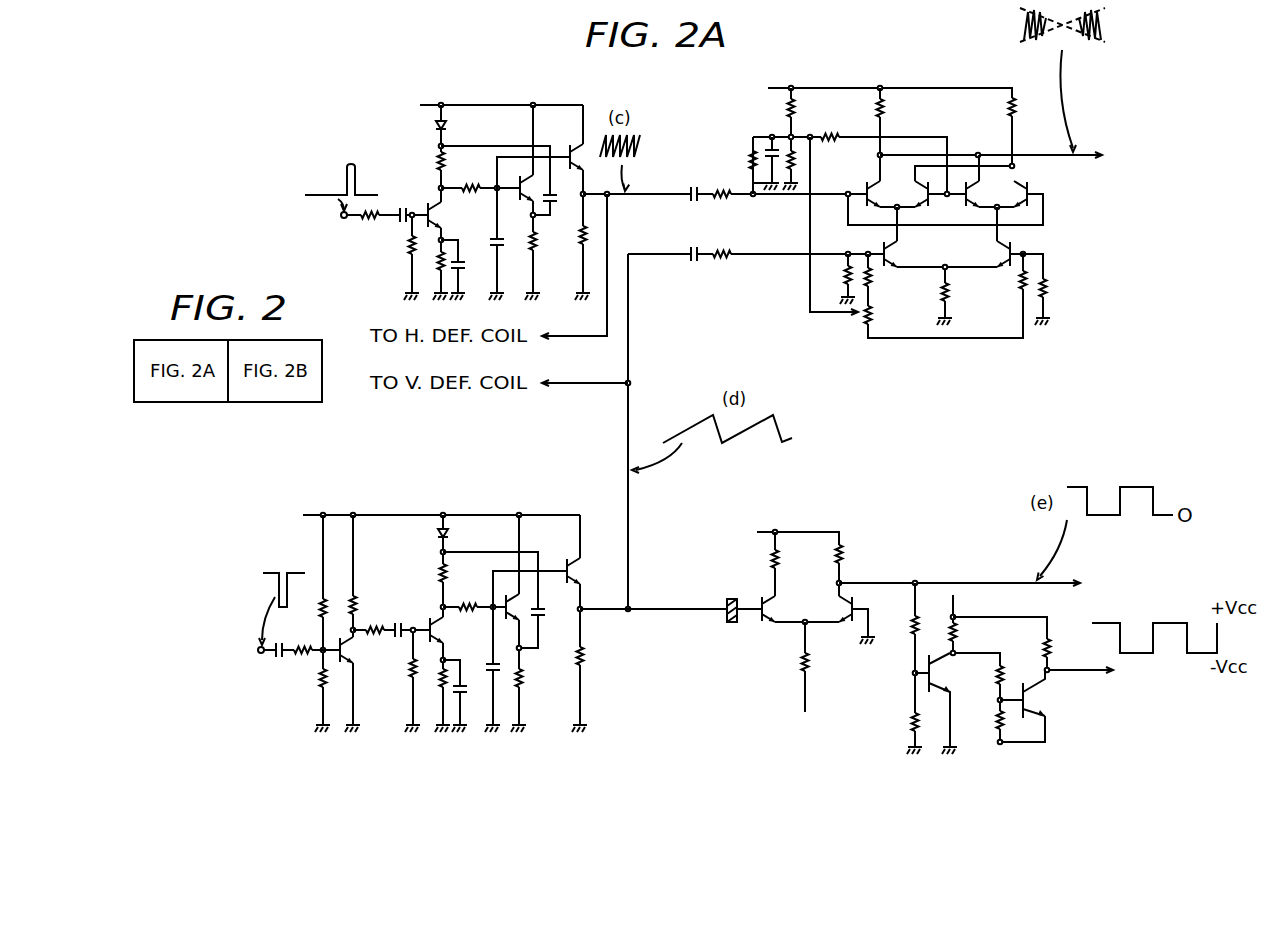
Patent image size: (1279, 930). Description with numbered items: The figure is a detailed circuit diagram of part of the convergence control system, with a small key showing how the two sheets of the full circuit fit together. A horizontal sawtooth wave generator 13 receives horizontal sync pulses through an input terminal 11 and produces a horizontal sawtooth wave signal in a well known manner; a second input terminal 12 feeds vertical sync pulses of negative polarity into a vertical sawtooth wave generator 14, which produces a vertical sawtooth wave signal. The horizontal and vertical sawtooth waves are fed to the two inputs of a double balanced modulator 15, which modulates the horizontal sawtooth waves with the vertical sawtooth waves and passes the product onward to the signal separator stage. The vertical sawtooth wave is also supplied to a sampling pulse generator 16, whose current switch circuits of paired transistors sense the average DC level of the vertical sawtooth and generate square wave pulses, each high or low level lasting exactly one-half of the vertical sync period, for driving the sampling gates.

The input terminal 11 is at (343, 219).
The second input terminal 12 is at (260, 654).
The horizontal sawtooth wave generator 13 is at (502, 83).
The vertical sawtooth wave generator 14 is at (459, 497).
The double balanced modulator 15 is at (901, 68).
The sampling pulse generator 16 is at (812, 515).